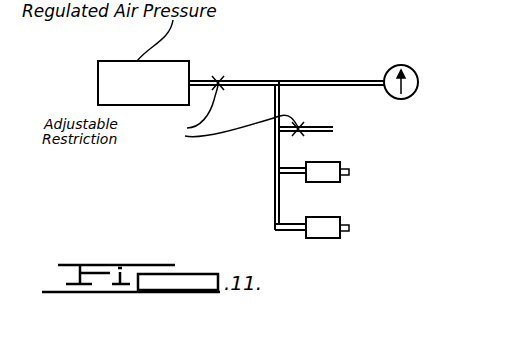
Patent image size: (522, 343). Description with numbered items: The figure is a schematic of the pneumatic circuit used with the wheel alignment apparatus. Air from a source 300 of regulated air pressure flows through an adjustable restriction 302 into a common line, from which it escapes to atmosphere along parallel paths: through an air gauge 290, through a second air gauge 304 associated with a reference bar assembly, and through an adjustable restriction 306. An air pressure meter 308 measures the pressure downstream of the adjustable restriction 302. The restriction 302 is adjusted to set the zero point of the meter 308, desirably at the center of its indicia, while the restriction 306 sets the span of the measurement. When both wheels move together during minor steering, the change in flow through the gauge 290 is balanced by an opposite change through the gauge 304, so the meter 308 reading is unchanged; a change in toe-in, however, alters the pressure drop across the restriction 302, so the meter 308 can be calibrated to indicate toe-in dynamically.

The source of regulated air pressure 300 is at (117, 61).
The adjustable restriction 302 is at (214, 82).
The air gauge 304 is at (333, 217).
The adjustable restriction 306 is at (299, 126).
The air pressure meter 308 is at (440, 55).
The air gauge 290 is at (337, 158).